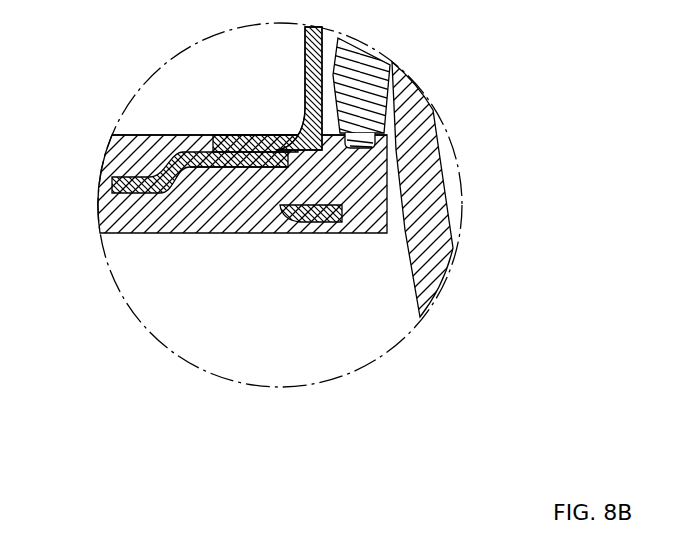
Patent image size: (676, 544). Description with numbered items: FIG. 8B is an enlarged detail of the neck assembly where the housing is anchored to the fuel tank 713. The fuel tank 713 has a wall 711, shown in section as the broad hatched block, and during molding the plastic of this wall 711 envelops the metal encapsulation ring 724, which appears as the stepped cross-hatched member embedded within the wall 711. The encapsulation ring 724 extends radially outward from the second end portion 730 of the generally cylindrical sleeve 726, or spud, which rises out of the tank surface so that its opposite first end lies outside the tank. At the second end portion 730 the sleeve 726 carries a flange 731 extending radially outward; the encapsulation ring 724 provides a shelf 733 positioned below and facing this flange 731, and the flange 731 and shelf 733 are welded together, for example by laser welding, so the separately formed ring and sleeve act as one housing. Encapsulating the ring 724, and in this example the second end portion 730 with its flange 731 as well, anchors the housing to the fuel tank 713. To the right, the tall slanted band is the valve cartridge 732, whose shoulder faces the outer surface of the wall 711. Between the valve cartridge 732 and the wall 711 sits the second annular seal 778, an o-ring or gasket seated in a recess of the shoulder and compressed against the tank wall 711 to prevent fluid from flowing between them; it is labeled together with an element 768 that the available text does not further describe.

The wall 711 is at (148, 134).
The fuel tank 713 is at (205, 225).
The encapsulation ring 724 is at (112, 193).
The sleeve 726 is at (305, 59).
The second end portion 730 is at (295, 101).
The flange 731 is at (252, 136).
The valve cartridge 732 is at (414, 127).
The shelf 733 is at (243, 165).
The seal member 768 is at (410, 92).
The second annular seal 778 is at (366, 62).